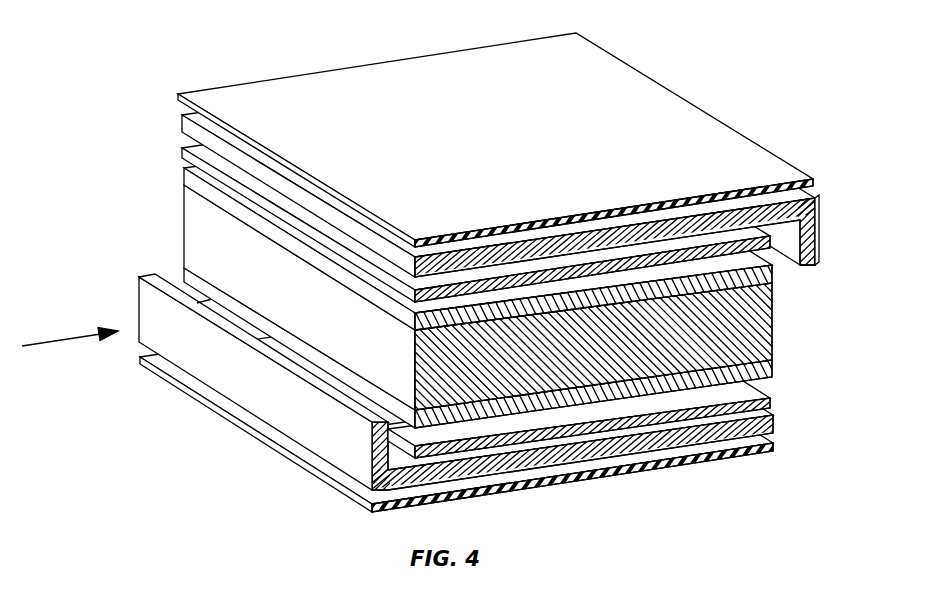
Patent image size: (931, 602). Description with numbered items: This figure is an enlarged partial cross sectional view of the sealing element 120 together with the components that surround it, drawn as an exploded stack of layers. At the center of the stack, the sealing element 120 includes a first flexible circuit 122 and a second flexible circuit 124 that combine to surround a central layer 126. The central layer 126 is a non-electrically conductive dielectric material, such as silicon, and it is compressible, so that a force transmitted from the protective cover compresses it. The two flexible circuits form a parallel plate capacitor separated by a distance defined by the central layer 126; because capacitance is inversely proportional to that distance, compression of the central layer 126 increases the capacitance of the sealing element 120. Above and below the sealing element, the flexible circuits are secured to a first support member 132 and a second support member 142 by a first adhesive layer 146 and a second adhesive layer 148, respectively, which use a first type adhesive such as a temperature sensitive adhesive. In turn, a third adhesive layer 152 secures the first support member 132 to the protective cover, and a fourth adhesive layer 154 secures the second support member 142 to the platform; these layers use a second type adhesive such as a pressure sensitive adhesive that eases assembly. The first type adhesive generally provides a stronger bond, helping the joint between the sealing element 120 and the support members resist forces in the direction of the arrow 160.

The sealing element 120 is at (456, 274).
The first flexible circuit 122 is at (183, 182).
The second flexible circuit 124 is at (183, 268).
The central layer 126 is at (183, 227).
The first support member 132 is at (820, 212).
The second support member 142 is at (773, 423).
The first adhesive layer 146 is at (182, 147).
The second adhesive layer 148 is at (773, 405).
The third adhesive layer 152 is at (517, 136).
The fourth adhesive layer 154 is at (746, 452).
The arrow 160 is at (50, 342).